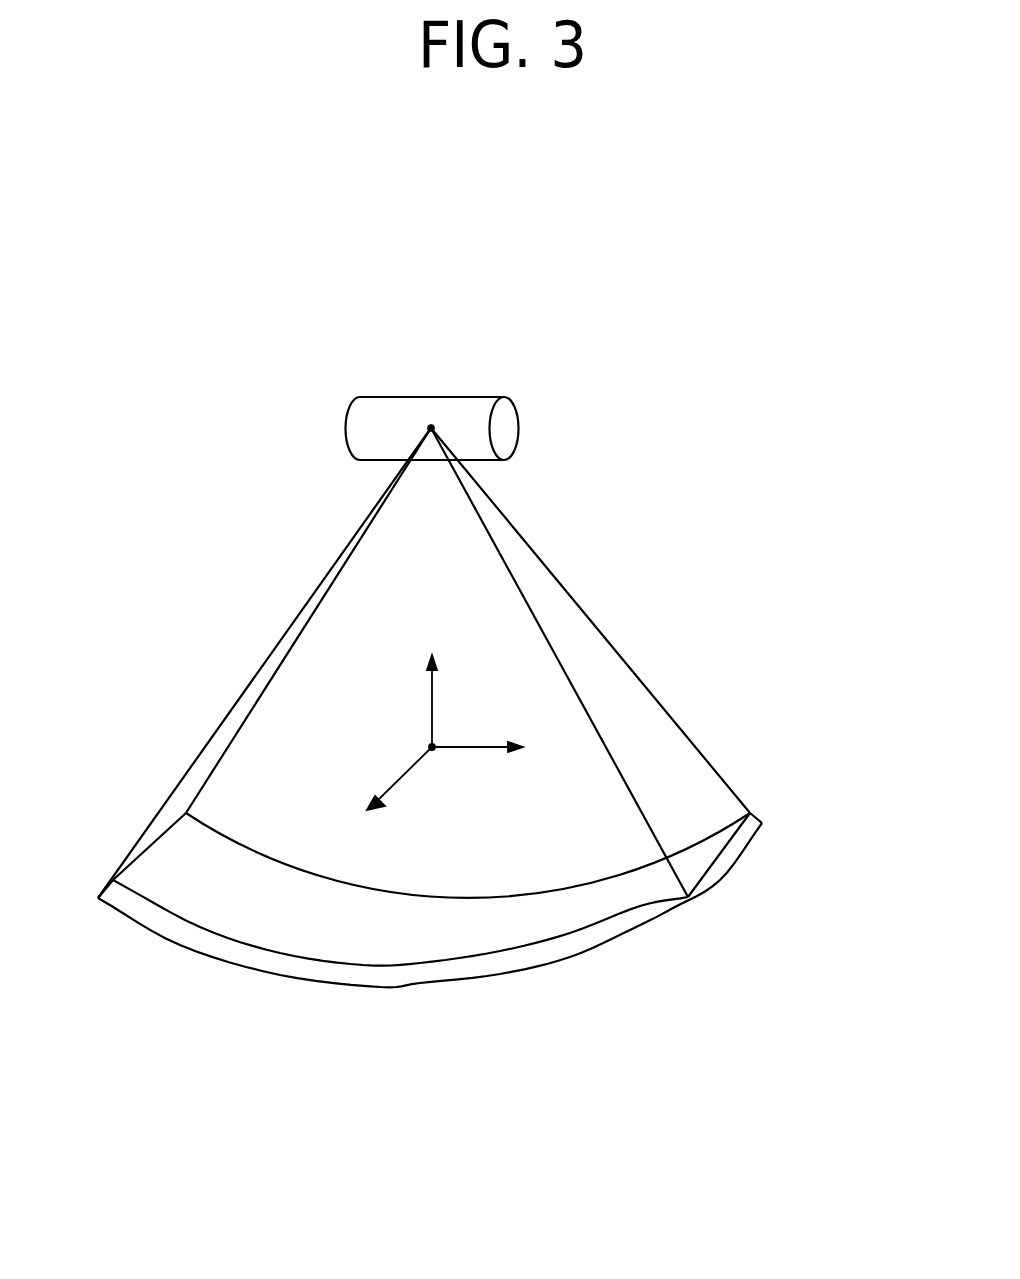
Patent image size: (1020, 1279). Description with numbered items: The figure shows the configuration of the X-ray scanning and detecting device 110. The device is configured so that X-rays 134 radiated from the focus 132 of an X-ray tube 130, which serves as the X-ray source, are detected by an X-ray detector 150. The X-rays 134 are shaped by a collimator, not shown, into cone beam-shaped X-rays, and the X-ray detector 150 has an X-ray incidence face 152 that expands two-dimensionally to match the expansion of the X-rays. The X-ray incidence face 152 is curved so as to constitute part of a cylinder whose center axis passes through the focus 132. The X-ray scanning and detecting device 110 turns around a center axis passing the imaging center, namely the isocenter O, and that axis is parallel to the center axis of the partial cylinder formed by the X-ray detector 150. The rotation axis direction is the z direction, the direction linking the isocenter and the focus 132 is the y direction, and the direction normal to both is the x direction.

The X-ray scanning and detecting device 110 is at (537, 214).
The X-ray tube 130 is at (377, 396).
The focus 132 is at (431, 428).
The X-rays 134 is at (553, 570).
The X-ray detector 150 is at (445, 939).
The X-ray incidence face 152 is at (273, 933).